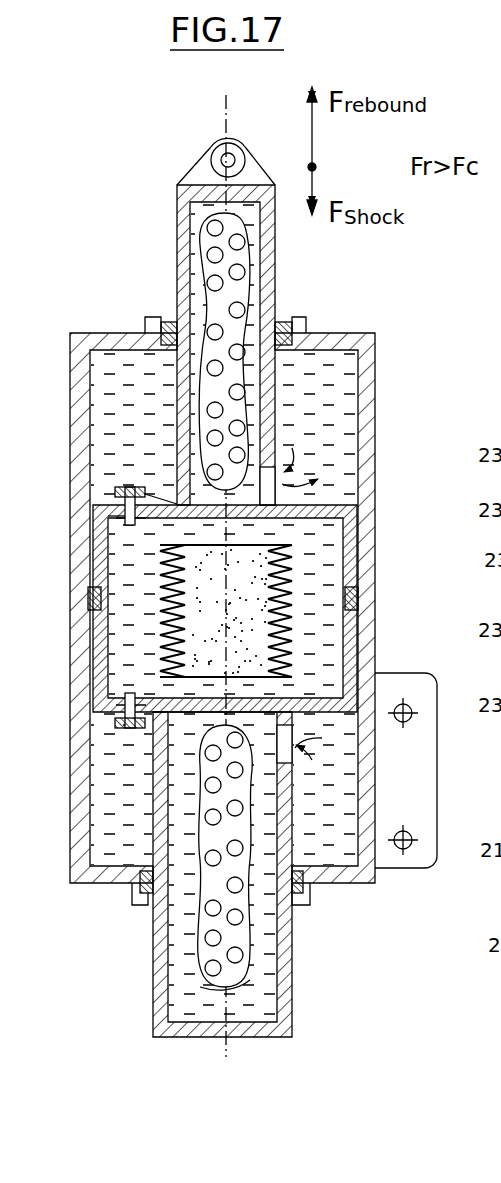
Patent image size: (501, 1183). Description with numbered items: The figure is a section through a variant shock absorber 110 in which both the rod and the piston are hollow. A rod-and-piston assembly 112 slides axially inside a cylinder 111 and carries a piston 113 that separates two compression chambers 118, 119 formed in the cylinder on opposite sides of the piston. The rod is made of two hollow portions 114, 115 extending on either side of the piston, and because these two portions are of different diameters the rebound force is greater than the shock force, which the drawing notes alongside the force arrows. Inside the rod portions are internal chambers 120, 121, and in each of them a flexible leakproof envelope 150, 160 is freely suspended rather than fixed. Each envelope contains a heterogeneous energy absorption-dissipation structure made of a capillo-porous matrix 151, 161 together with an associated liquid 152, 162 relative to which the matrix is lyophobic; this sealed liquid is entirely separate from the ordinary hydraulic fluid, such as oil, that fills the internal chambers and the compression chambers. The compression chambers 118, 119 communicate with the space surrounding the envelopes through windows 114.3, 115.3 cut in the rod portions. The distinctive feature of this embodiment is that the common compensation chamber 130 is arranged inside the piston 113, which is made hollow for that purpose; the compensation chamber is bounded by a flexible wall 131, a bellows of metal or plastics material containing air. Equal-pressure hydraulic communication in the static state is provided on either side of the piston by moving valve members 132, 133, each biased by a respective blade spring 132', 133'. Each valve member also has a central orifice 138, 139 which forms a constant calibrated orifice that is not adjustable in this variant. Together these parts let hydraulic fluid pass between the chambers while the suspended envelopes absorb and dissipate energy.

The shock absorber 110 is at (416, 297).
The cylinder 111 is at (350, 615).
The rod-and-piston assembly 112 is at (175, 243).
The piston 113 is at (350, 533).
The hollow rod portion 114 is at (276, 288).
The window 114.3 is at (345, 449).
The hollow rod portion 115 is at (291, 950).
The window 115.3 is at (350, 748).
The compression chamber 118 is at (345, 403).
The compression chamber 119 is at (125, 835).
The internal chamber 120 is at (283, 315).
The internal chamber 121 is at (268, 997).
The common compensation chamber 130 is at (350, 569).
The flexible wall 131 is at (340, 640).
The valve member 132 is at (105, 456).
The blade spring 132' is at (108, 404).
The valve member 133 is at (83, 755).
The blade spring 133' is at (94, 798).
The central orifice 138 is at (118, 520).
The central orifice 139 is at (120, 713).
The flexible leakproof envelope 150 is at (180, 226).
The capillo-porous matrix 151 is at (240, 247).
The liquid 152 is at (215, 313).
The flexible leakproof envelope 160 is at (283, 900).
The capillo-porous matrix 161 is at (213, 946).
The liquid 162 is at (237, 986).